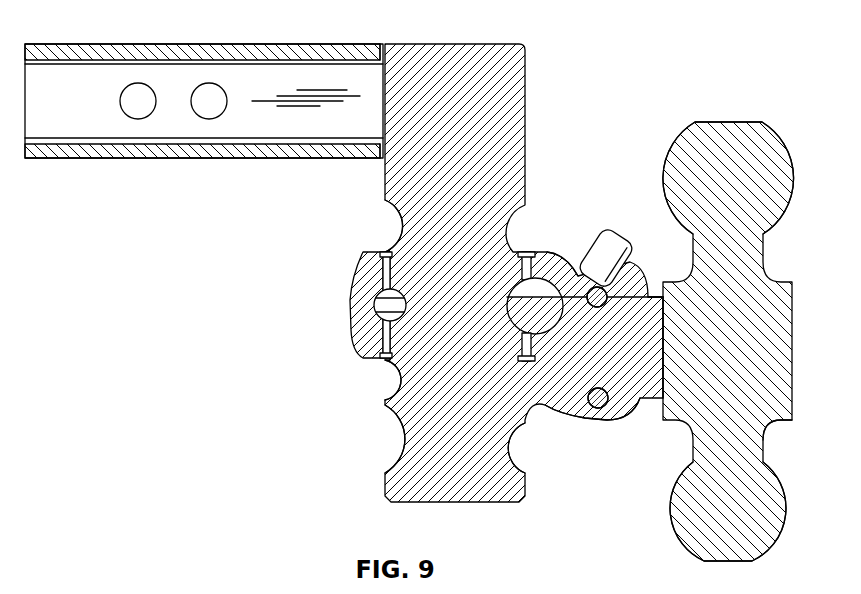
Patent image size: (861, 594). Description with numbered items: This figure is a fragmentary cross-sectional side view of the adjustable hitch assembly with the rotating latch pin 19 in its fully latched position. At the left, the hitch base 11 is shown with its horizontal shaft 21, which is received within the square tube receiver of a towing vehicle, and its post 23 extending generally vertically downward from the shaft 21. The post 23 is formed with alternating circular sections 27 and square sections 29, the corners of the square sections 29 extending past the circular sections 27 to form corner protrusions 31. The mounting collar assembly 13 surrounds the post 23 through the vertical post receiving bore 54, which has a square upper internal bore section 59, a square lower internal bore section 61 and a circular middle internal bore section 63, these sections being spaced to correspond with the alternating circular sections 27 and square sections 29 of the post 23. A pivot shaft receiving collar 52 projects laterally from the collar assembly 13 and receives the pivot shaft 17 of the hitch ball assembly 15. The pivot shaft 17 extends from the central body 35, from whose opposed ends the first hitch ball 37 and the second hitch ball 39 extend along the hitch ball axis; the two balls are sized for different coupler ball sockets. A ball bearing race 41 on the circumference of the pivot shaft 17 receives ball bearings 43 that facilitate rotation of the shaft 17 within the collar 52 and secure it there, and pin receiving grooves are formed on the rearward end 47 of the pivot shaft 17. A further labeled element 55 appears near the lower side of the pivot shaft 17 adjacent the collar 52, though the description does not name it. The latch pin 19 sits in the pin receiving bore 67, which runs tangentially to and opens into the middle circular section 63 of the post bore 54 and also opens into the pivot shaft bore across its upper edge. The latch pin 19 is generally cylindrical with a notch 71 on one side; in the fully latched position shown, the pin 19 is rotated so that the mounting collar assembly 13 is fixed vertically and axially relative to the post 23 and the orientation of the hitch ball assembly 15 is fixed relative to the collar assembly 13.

The hitch base 11 is at (524, 255).
The mounting collar assembly 13 is at (346, 307).
The hitch ball assembly 15 is at (747, 322).
The pivot shaft 17 is at (647, 300).
The rotating latch pin 19 is at (547, 262).
The shaft 21 is at (147, 44).
The post 23 is at (527, 86).
The circular sections 27 is at (396, 456).
The square sections 29 is at (386, 410).
The corner protrusions 31 is at (513, 428).
The central body 35 is at (793, 400).
The first hitch ball 37 is at (722, 132).
The second hitch ball 39 is at (778, 516).
The ball bearing race 41 is at (563, 414).
The ball bearings 43 is at (593, 424).
The rearward end 47 is at (596, 288).
The pivot shaft receiving collar 52 is at (620, 258).
The post receiving bore 54 is at (386, 250).
The lower pivot pin 55 is at (606, 410).
The upper internal bore section 59 is at (371, 262).
The lower internal bore section 61 is at (369, 346).
The middle internal bore section 63 is at (371, 302).
The pin receiving bore 67 is at (568, 266).
The notch 71 is at (507, 242).